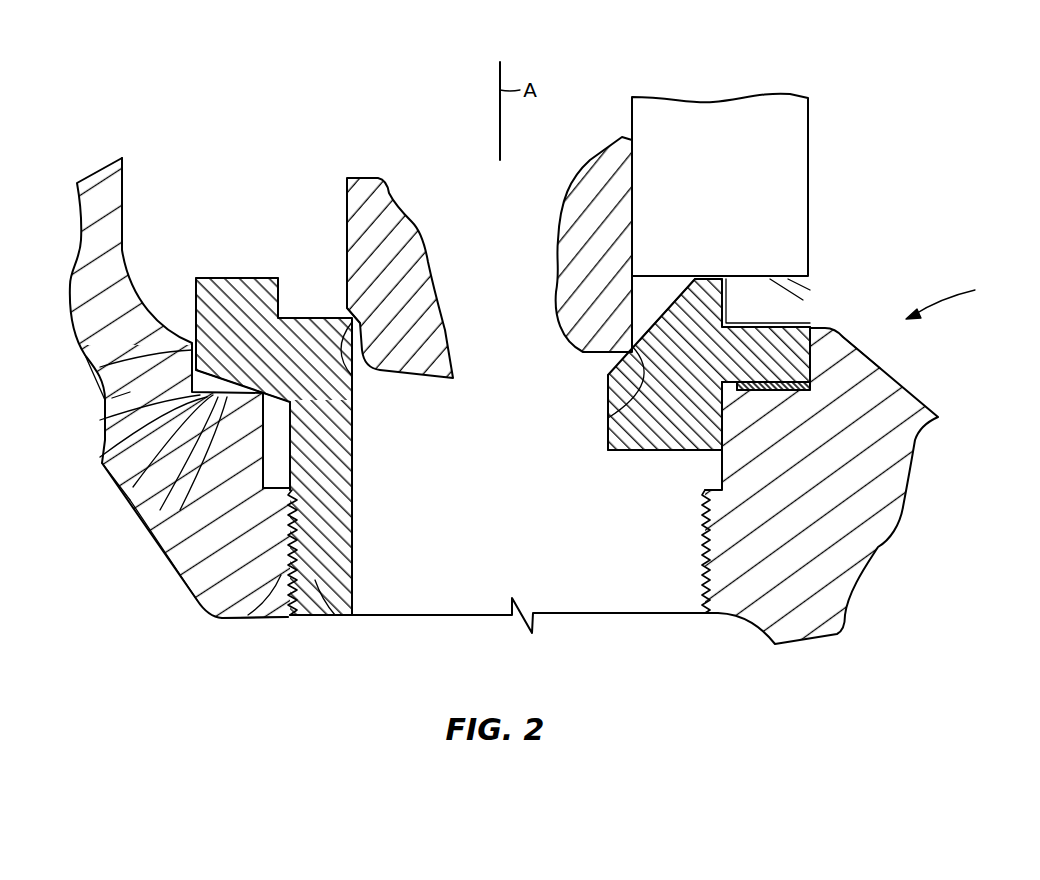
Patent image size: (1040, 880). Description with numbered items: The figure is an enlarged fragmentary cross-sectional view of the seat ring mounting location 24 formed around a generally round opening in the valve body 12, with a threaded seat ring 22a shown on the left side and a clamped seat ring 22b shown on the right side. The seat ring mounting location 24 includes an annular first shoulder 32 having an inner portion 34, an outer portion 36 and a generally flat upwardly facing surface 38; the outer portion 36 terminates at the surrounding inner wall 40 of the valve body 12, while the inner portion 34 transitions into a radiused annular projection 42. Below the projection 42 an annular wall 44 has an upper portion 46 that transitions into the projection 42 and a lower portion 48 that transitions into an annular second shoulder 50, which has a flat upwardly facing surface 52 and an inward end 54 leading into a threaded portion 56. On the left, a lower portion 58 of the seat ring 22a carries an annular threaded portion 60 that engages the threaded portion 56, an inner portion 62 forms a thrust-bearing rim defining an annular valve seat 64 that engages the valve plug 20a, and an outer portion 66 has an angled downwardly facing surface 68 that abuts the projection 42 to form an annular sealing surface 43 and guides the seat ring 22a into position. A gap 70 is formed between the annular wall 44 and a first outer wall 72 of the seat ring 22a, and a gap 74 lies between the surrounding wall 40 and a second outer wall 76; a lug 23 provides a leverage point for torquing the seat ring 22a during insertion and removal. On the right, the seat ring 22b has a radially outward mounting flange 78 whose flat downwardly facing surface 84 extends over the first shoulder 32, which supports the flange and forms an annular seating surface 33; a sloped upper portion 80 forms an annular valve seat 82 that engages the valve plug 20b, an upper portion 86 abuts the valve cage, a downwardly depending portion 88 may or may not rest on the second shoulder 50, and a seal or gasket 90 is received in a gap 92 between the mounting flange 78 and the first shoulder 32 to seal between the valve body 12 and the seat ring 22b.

The valve body 12 is at (788, 488).
The valve plug 20a is at (413, 228).
The valve plug 20b is at (583, 190).
The seat ring 22a is at (301, 317).
The seat ring 22b is at (810, 158).
The lug 23 is at (216, 278).
The seat ring mounting location 24 is at (956, 300).
The first shoulder 32 is at (118, 490).
The annular seating surface 33 is at (810, 392).
The inner portion 34 is at (225, 437).
The outer portion 36 is at (105, 435).
The upwardly facing surface 38 is at (200, 372).
The inner wall 40 is at (98, 370).
The projection 42 is at (255, 410).
The annular sealing surface 43 is at (275, 400).
The annular wall 44 is at (262, 472).
The upper portion 46 is at (292, 442).
The lower portion 48 is at (265, 493).
The second shoulder 50 is at (280, 490).
The upwardly facing surface 52 is at (272, 487).
The inward end 54 is at (285, 464).
The threaded portion 56 is at (258, 615).
The lower portion 58 is at (335, 545).
The threaded portion 60 is at (335, 615).
The inner portion 62 is at (345, 330).
The valve seat 64 is at (352, 380).
The outer portion 66 is at (252, 283).
The downwardly facing surface 68 is at (148, 528).
The gap 70 is at (298, 466).
The first outer wall 72 is at (292, 441).
The gap 74 is at (112, 398).
The second outer wall 76 is at (195, 285).
The mounting flange 78 is at (797, 343).
The upper portion 80 is at (672, 303).
The valve seat 82 is at (622, 405).
The downwardly facing surface 84 is at (812, 290).
The upper portion 86 is at (705, 279).
The downwardly depending portion 88 is at (693, 440).
The seal or gasket 90 is at (818, 376).
The gap 92 is at (727, 388).